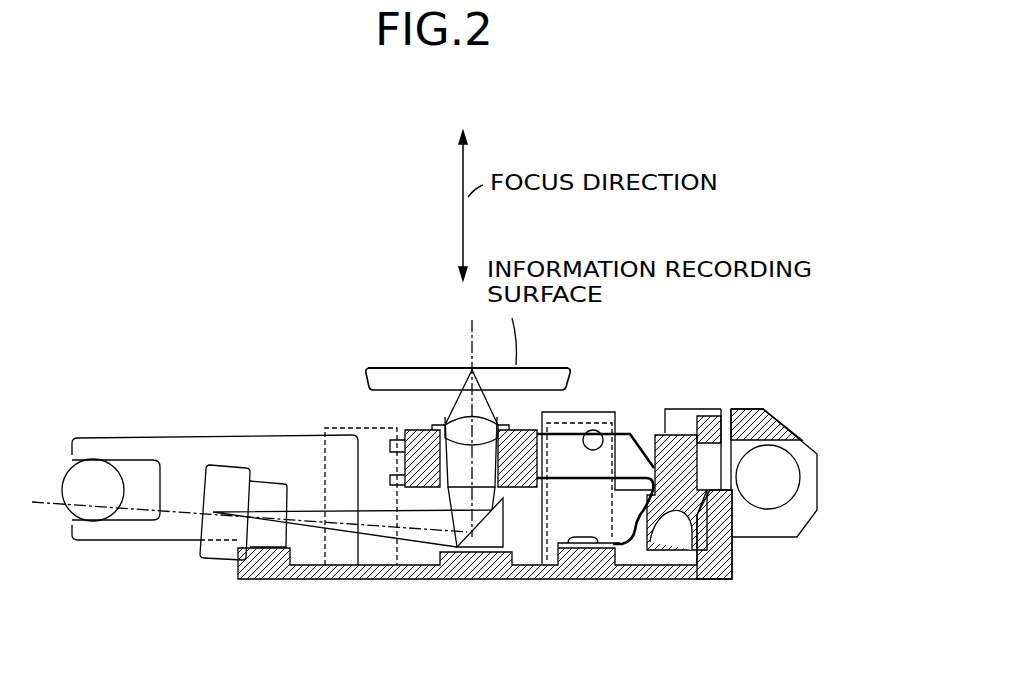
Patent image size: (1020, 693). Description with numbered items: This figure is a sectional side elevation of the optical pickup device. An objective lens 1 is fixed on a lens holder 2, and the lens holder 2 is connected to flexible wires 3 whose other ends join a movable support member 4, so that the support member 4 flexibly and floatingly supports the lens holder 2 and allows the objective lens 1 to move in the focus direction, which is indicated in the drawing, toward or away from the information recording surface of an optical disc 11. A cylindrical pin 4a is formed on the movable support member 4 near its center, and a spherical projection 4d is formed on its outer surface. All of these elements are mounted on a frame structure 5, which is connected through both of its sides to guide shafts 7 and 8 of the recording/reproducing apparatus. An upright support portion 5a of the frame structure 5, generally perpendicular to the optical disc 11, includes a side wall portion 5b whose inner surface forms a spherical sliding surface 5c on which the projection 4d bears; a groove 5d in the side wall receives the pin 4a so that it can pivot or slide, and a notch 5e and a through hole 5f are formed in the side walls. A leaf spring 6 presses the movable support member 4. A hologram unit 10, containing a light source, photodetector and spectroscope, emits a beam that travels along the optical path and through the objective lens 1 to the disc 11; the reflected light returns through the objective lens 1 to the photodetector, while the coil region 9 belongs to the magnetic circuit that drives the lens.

The objective lens 1 is at (485, 418).
The lens holder 2 is at (417, 430).
The flexible wires 3 is at (573, 430).
The movable support member 4 is at (660, 537).
The cylindrical pin 4a is at (727, 462).
The spherical projection 4d is at (700, 548).
The frame structure 5 is at (462, 582).
The support portion 5a is at (692, 408).
The side wall portion 5b is at (733, 513).
The sliding surface 5c is at (632, 548).
The groove 5d is at (753, 435).
The notch 5e is at (657, 420).
The through hole 5f is at (591, 450).
The leaf spring 6 is at (645, 433).
The guide shaft 7 is at (775, 465).
The guide shaft 8 is at (80, 476).
The coil 9 is at (338, 428).
The hologram unit 10 is at (227, 470).
The optical disc 11 is at (398, 378).